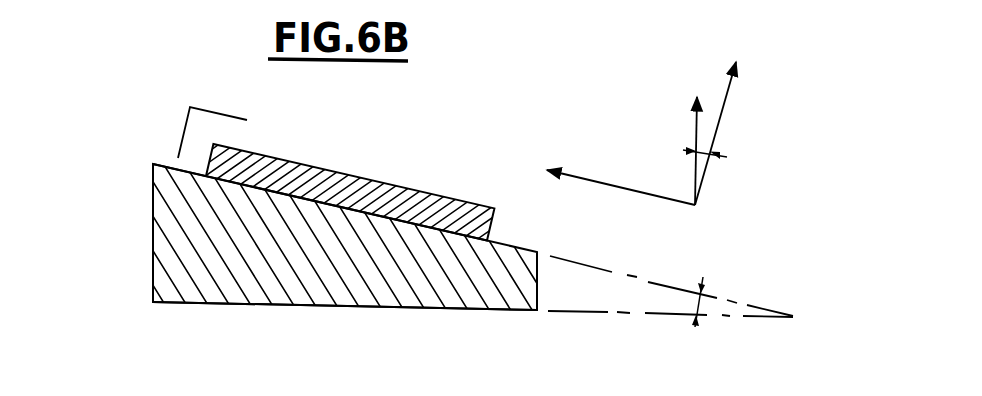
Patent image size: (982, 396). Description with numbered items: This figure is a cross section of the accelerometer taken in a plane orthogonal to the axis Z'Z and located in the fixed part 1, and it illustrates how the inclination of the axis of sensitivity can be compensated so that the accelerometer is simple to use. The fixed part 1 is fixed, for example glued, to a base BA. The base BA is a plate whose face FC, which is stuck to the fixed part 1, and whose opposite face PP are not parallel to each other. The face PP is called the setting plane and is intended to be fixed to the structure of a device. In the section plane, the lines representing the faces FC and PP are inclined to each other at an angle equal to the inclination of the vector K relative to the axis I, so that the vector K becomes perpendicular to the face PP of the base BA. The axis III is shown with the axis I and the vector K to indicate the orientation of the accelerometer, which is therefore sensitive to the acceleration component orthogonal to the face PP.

The fixed part 1 is at (380, 185).
The face of the base stuck to the fixed part FC is at (164, 166).
The base BA is at (187, 238).
The setting plane PP is at (187, 304).
The vector K is at (690, 50).
The axis I is at (765, 67).
The axis III is at (568, 158).